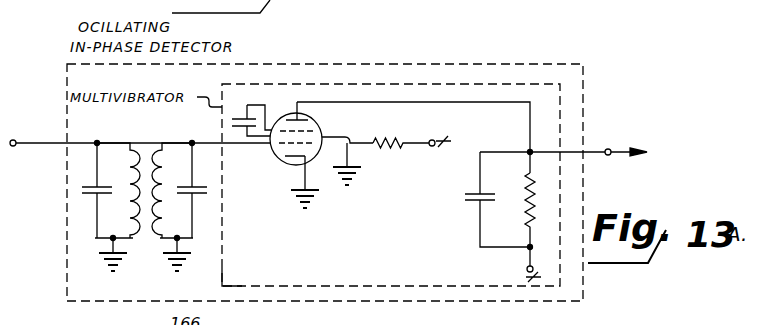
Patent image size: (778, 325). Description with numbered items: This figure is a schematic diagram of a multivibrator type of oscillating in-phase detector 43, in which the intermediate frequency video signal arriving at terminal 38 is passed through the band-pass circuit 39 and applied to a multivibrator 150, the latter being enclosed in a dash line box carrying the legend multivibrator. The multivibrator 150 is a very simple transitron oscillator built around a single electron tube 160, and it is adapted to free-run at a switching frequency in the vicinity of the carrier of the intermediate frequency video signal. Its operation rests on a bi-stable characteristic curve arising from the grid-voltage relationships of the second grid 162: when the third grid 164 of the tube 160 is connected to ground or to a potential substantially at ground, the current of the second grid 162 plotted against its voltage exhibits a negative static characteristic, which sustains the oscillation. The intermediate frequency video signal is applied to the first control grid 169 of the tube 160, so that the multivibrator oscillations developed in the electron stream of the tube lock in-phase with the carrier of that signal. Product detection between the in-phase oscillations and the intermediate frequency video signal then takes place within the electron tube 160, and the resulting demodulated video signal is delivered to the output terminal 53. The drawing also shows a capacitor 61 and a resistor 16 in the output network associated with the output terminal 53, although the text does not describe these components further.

The terminal 38 is at (15, 140).
The band-pass circuit 39 is at (158, 134).
The oscillating in-phase detector 43 is at (374, 64).
The multivibrator 150 is at (222, 263).
The electron tube 160 is at (294, 148).
The second grid 162 is at (282, 138).
The third grid 164 is at (316, 132).
The first control grid 169 is at (286, 151).
The capacitor 61 is at (471, 195).
The resistor 16 is at (522, 193).
The output terminal 53 is at (608, 149).